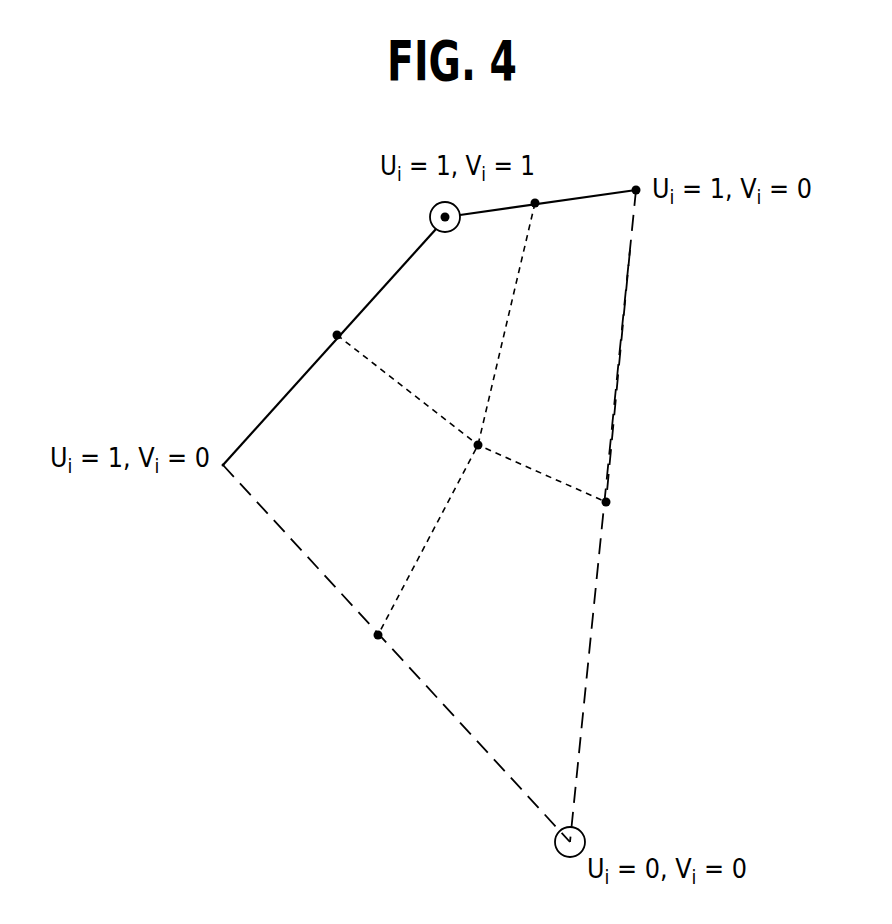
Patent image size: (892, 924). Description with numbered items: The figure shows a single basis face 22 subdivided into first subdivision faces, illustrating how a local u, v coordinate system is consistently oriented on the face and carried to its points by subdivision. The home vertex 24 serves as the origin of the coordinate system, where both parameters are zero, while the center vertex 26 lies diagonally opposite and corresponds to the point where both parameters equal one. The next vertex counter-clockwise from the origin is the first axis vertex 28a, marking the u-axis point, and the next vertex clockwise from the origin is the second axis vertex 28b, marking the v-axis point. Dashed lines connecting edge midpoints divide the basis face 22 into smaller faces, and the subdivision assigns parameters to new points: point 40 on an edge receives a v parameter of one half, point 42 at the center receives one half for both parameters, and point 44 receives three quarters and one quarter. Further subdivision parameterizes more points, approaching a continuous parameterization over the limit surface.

The basis face 22 is at (667, 475).
The home vertex 24 is at (582, 831).
The center vertex 26 is at (430, 219).
The first axis vertex 28a is at (636, 186).
The second axis vertex 28b is at (223, 468).
The point 40 is at (375, 637).
The point 42 is at (481, 441).
The point 44 is at (593, 357).